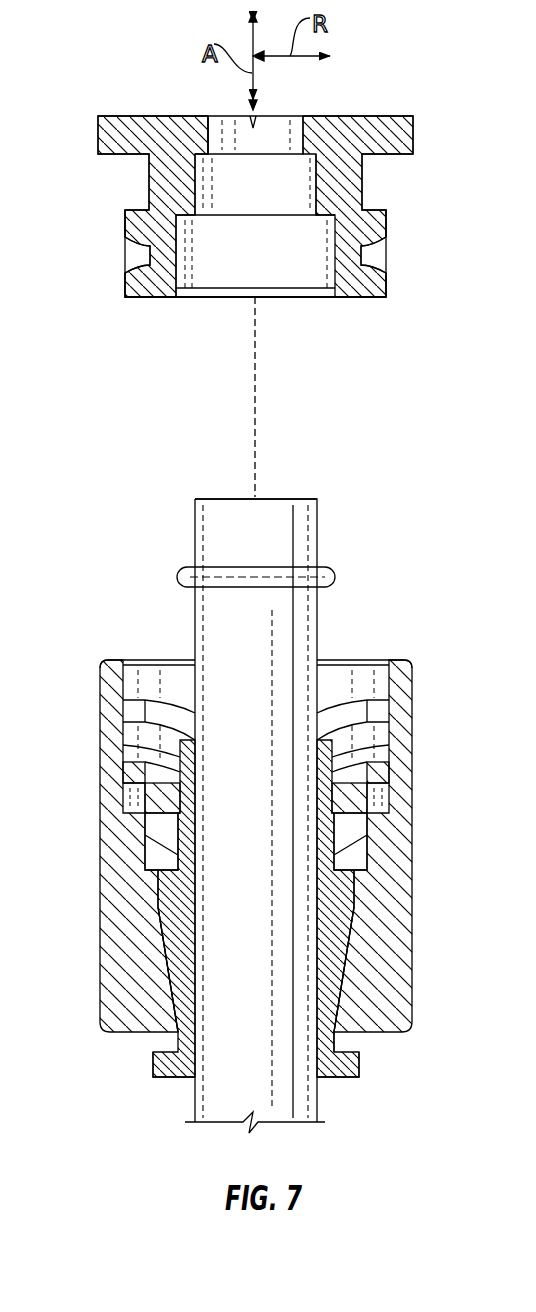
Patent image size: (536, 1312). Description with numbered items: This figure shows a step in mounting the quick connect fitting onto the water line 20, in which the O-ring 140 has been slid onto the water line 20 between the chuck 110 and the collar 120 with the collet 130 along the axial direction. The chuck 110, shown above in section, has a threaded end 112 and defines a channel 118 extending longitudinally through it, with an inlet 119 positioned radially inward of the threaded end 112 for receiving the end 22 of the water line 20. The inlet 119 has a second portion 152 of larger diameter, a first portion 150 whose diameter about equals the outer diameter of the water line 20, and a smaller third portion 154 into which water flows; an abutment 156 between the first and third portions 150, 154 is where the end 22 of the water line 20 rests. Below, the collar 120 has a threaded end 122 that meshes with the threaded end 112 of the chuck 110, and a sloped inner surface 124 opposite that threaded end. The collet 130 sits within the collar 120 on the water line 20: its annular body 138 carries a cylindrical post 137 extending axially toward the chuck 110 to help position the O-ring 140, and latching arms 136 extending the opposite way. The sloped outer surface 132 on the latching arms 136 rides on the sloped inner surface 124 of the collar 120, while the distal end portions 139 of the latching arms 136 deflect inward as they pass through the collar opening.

The water line 20 is at (208, 523).
The end of water line 22 is at (293, 495).
The chuck 110 is at (168, 130).
The threaded end of chuck 112 is at (123, 230).
The channel 118 is at (277, 135).
The inlet of channel 119 is at (321, 300).
The collar 120 is at (122, 882).
The threaded end of collar 122 is at (416, 697).
The sloped inner surface of collar 124 is at (335, 1005).
The collet 130 is at (325, 847).
The sloped outer surface of collet 132 is at (160, 947).
The latching arms 136 is at (340, 950).
The post 137 is at (185, 760).
The annular body 138 is at (162, 803).
The distal end portion of latching arm 139 is at (160, 1063).
The O-ring 140 is at (337, 574).
The first portion of inlet 150 is at (271, 190).
The second portion of inlet 152 is at (215, 268).
The third portion of inlet 154 is at (262, 137).
The abutment 156 is at (305, 163).